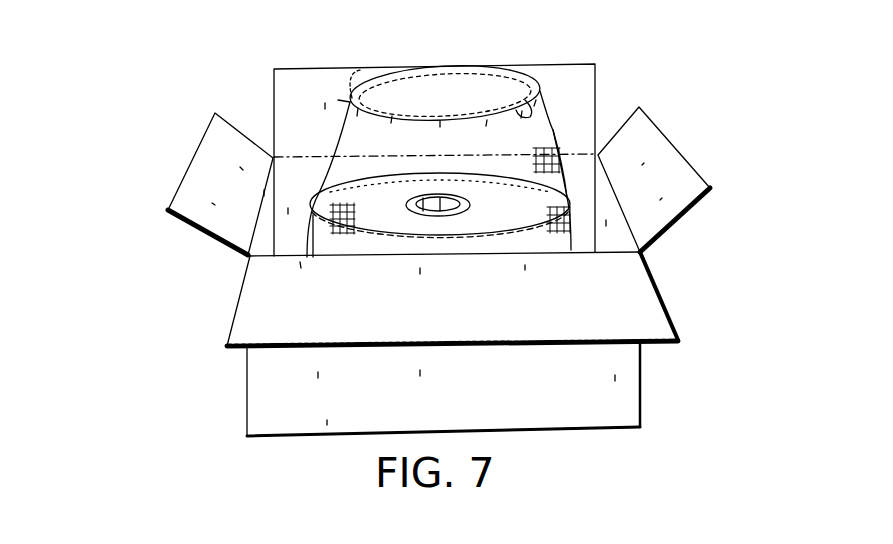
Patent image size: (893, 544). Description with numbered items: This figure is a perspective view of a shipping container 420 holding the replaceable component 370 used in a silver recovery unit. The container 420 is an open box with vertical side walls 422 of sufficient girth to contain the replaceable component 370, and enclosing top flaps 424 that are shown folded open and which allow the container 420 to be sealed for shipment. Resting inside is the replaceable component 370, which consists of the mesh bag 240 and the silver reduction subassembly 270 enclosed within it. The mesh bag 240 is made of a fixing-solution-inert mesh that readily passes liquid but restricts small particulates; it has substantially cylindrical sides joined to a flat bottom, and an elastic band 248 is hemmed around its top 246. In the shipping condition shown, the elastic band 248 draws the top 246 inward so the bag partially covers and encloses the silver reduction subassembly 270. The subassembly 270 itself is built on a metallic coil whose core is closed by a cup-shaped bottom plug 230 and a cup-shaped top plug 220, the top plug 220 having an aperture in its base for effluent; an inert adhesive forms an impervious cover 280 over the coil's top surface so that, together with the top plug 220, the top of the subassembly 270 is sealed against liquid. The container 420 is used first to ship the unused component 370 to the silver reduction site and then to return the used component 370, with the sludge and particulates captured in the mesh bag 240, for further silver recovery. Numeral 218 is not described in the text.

The top rim 218 is at (428, 63).
The top plug 220 is at (478, 193).
The bottom plug 230 is at (441, 59).
The mesh bag 240 is at (597, 152).
The top 246 is at (523, 83).
The elastic band 248 is at (538, 138).
The silver reduction subassembly 270 is at (548, 209).
The impervious cover 280 is at (350, 196).
The replaceable component 370 is at (338, 100).
The shipping container 420 is at (663, 283).
The side walls 422 is at (610, 368).
The top flaps 424 is at (290, 97).